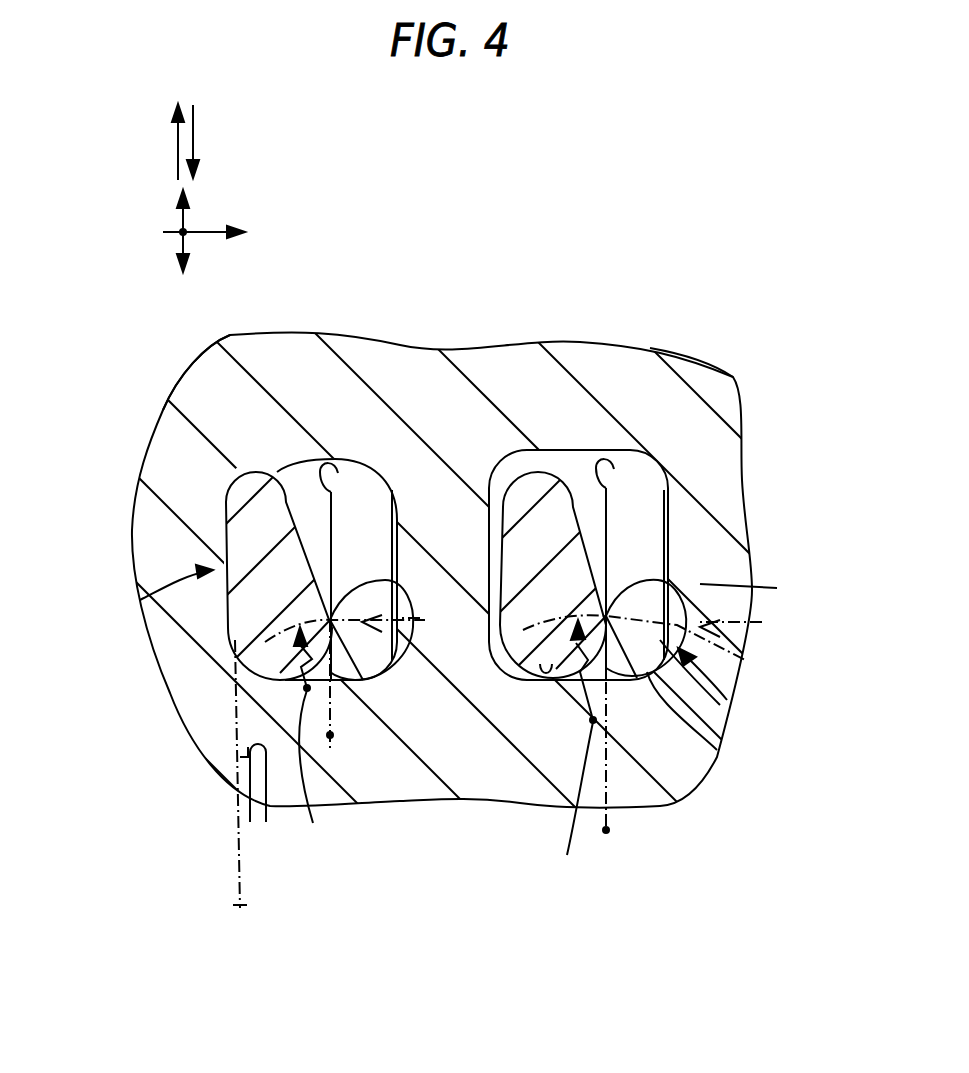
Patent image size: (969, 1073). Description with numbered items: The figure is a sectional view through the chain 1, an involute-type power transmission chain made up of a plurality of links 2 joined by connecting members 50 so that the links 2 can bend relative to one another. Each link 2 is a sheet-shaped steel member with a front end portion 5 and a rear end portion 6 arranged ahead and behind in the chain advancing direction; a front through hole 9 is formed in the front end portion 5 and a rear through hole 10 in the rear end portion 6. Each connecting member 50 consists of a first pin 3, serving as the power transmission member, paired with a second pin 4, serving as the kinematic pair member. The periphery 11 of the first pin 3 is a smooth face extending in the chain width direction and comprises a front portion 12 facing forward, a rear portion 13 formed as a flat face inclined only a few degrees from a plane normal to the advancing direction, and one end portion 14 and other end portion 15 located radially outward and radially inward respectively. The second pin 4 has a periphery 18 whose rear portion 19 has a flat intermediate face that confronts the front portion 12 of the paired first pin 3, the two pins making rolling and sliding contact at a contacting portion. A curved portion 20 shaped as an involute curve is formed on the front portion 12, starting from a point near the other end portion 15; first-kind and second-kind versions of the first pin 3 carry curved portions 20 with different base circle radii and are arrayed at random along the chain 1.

The chain 1 is at (690, 262).
The link 2 is at (735, 380).
The first pin 3 is at (230, 627).
The second pin 4 is at (405, 770).
The front end portion 5 is at (697, 362).
The rear end portion 6 is at (188, 385).
The front through hole 9 is at (547, 676).
The slit 10 is at (254, 769).
The periphery 11 is at (288, 470).
The front portion 12 is at (600, 455).
The rear portion 13 is at (228, 594).
The one end portion 14 is at (232, 477).
The other end portion 15 is at (280, 680).
The periphery 18 is at (398, 500).
The rear portion 19 is at (345, 460).
The curved portion 20 is at (320, 548).
The connecting member 50 is at (140, 600).